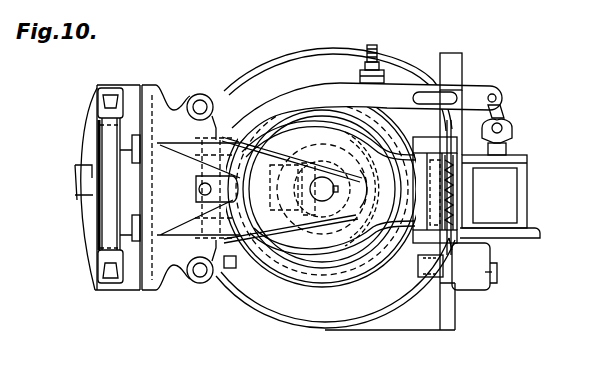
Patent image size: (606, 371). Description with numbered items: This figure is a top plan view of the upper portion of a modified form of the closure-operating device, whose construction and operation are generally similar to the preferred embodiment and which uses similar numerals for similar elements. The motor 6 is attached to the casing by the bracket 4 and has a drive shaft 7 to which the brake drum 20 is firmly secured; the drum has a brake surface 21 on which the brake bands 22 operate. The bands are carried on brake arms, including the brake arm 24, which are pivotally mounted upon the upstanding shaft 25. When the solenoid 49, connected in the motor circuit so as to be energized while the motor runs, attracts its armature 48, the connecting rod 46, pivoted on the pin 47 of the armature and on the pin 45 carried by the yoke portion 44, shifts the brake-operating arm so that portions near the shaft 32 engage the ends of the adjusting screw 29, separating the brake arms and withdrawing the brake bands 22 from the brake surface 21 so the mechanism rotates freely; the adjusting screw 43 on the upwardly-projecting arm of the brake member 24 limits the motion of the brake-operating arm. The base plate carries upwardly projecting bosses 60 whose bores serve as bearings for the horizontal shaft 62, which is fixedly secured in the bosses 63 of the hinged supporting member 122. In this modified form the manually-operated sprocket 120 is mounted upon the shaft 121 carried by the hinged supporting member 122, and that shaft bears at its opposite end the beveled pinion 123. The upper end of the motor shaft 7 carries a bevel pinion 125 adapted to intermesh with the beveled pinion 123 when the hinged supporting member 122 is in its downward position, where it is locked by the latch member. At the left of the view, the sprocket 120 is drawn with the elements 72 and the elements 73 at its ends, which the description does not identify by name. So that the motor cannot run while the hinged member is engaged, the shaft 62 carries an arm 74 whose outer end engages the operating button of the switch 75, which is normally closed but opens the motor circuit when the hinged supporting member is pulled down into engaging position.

The bracket 4 is at (456, 58).
The motor 6 is at (296, 320).
The drive shaft 7 is at (333, 165).
The brake drum 20 is at (357, 265).
The brake surface 21 is at (382, 232).
The brake bands 22 is at (325, 270).
The brake arm 24 is at (397, 253).
The upstanding shaft 25 is at (403, 186).
The adjusting screw 29 is at (425, 140).
The shaft 32 is at (188, 232).
The adjusting screw 43 is at (379, 54).
The yoke portion 44 is at (386, 72).
The pin 45 is at (497, 98).
The connecting rod 46 is at (504, 112).
The pin 47 is at (504, 128).
The armature 48 is at (506, 149).
The solenoid 49 is at (510, 198).
The bosses 60 is at (474, 266).
The horizontal shaft 62 is at (448, 148).
The bosses 63 is at (448, 213).
The cup 72 is at (98, 102).
The retainer block 73 is at (110, 92).
The arm 74 is at (426, 292).
The switch 75 is at (492, 272).
The manually-operated sprocket 120 is at (100, 142).
The shaft 121 is at (172, 110).
The hinged supporting member 122 is at (472, 92).
The beveled pinion 123 is at (313, 162).
The bevel pinion 125 is at (345, 170).